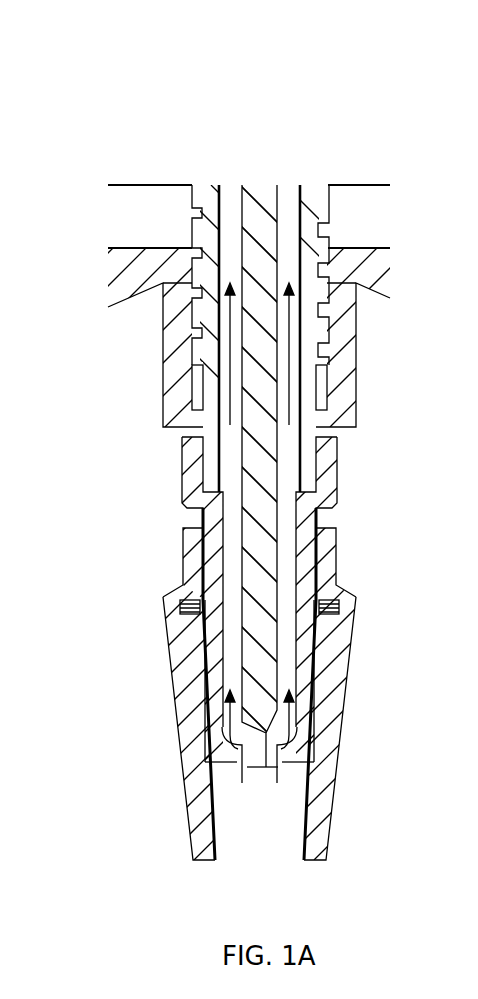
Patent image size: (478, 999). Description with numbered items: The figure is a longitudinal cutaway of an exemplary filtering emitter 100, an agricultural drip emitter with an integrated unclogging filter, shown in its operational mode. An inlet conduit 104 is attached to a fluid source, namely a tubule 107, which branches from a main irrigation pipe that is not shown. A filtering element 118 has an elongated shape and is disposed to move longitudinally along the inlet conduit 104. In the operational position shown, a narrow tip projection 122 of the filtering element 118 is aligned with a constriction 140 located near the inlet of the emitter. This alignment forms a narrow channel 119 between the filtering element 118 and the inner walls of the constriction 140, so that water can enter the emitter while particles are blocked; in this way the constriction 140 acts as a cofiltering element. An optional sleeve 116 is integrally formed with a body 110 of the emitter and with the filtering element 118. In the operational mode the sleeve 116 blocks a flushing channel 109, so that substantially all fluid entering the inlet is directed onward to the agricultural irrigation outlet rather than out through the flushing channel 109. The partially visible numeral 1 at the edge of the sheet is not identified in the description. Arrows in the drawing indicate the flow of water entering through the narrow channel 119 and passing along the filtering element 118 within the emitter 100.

The filtering emitter 100 is at (157, 85).
The fluid supply line 1 is at (403, 214).
The inlet conduit 104 is at (157, 393).
The tubule 107 is at (322, 847).
The flushing channel 109 is at (330, 433).
The body 110 is at (338, 187).
The sleeve 116 is at (315, 395).
The filtering element 118 is at (263, 622).
The narrow channel 119 is at (266, 768).
The narrow tip projection 122 is at (266, 768).
The constriction 140 is at (233, 751).